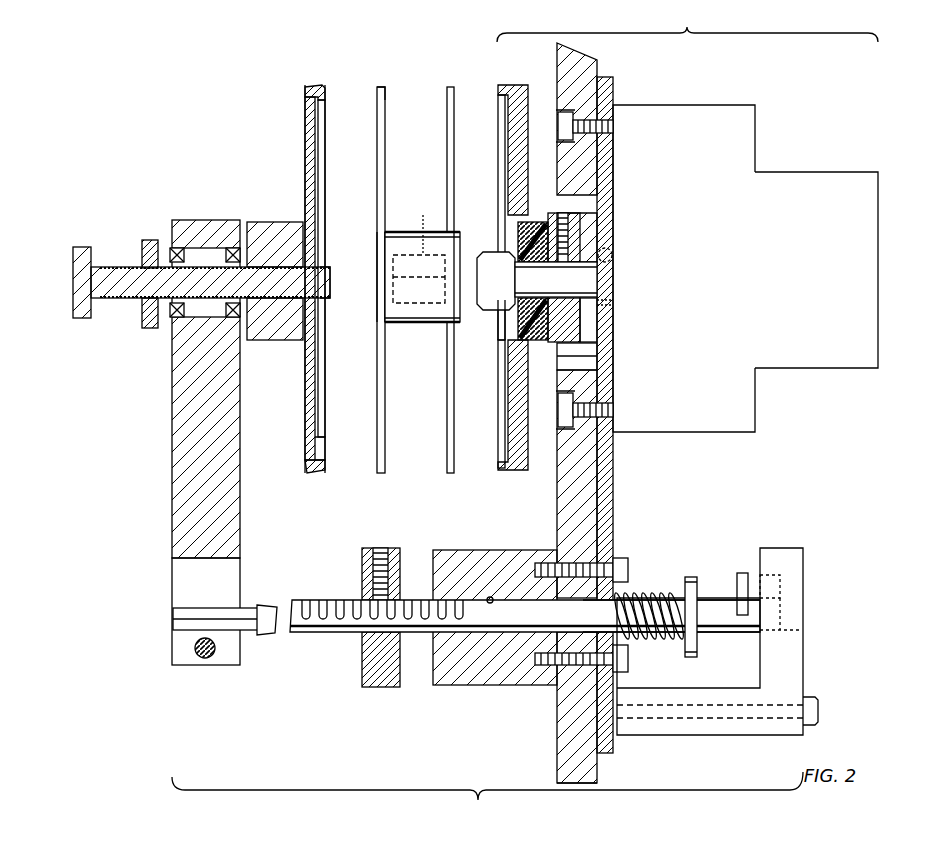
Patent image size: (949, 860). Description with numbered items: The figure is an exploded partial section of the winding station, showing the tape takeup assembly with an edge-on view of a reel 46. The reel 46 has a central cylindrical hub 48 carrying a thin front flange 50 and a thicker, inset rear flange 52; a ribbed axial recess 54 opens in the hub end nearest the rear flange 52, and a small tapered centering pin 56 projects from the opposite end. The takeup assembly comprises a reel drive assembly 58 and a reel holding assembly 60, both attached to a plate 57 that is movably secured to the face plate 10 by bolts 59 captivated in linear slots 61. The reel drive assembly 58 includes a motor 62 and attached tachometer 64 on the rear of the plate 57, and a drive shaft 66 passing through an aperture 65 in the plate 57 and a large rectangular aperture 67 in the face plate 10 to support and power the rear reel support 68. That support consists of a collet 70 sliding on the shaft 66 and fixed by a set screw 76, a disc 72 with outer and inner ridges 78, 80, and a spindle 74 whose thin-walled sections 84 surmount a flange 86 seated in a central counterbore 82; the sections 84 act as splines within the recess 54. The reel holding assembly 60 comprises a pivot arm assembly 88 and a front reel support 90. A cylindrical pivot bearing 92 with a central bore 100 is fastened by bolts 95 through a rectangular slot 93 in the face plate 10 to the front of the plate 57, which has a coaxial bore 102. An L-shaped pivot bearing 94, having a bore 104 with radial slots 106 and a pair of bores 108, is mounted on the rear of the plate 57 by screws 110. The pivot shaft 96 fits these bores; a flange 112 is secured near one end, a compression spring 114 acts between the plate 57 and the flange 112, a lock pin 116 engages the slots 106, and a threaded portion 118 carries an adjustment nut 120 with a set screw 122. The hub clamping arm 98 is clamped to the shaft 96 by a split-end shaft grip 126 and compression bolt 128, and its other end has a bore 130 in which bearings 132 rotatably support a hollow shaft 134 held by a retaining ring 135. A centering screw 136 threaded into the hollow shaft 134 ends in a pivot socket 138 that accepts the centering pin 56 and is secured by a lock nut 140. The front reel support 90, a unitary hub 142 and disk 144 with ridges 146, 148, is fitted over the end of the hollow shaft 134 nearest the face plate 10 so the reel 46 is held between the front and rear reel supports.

The face plate 10 is at (557, 483).
The reel 46 is at (420, 96).
The hub 48 is at (428, 322).
The front flange 50 is at (383, 405).
The rear flange 52 is at (447, 425).
The axial recess 54 is at (419, 250).
The centering pin 56 is at (377, 290).
The plate 57 is at (611, 483).
The reel drive assembly 58 is at (687, 21).
The bolts 59 is at (560, 125).
The reel holding assembly 60 is at (487, 799).
The slots 61 is at (562, 142).
The motor 62 is at (689, 268).
The tachometer 64 is at (804, 268).
The aperture 65 is at (612, 256).
The drive shaft 66 is at (537, 291).
The aperture 67 is at (570, 366).
The rear reel support 68 is at (520, 94).
The collet 70 is at (575, 318).
The disc 72 is at (522, 158).
The spindle 74 is at (497, 310).
The set screw 76 is at (575, 208).
The outer ridge 78 is at (500, 465).
The inner ridge 80 is at (500, 430).
The counterbore 82 is at (585, 340).
The sections 84 is at (492, 252).
The flange 86 is at (520, 228).
The pivot arm assembly 88 is at (173, 642).
The front reel support 90 is at (300, 178).
The pivot bearing 92 is at (470, 688).
The rectangular slot 93 is at (560, 672).
The pivot bearing 94 is at (805, 651).
The bolts 95 is at (629, 566).
The pivot shaft 96 is at (308, 634).
The hub clamping arm 98 is at (173, 490).
The central bore 100 is at (490, 597).
The bore 102 is at (622, 612).
The bore 104 is at (802, 600).
The slots 106 is at (763, 575).
The bores 108 is at (722, 720).
The screws 110 is at (818, 700).
The flange 112 is at (690, 577).
The compression spring 114 is at (670, 640).
The lock pin 116 is at (742, 573).
The threaded portion 118 is at (338, 605).
The adjustment nut 120 is at (372, 687).
The set screw 122 is at (382, 552).
The split-end shaft grip 126 is at (190, 608).
The compression bolt 128 is at (205, 660).
The bore 130 is at (205, 220).
The bearings 132 is at (232, 318).
The hollow shaft 134 is at (272, 320).
The retaining ring 135 is at (176, 248).
The centering screw 136 is at (73, 284).
The pivot socket 138 is at (330, 280).
The lock nut 140 is at (148, 240).
The hub 142 is at (272, 222).
The disk 144 is at (305, 140).
The ridge 146 is at (323, 88).
The ridge 148 is at (322, 135).